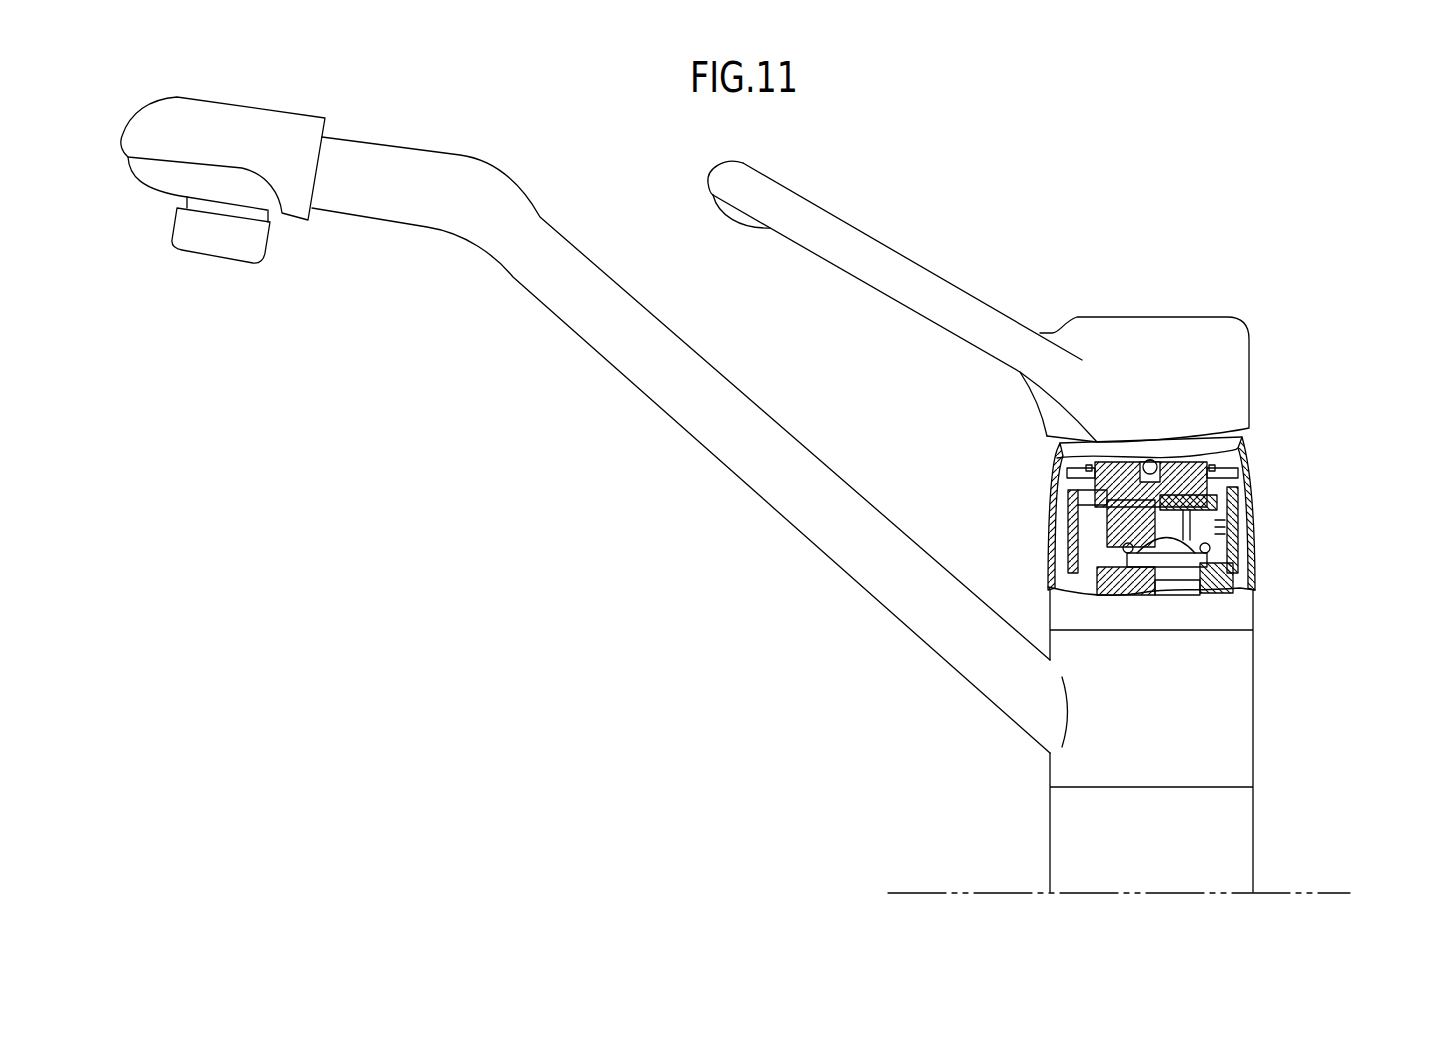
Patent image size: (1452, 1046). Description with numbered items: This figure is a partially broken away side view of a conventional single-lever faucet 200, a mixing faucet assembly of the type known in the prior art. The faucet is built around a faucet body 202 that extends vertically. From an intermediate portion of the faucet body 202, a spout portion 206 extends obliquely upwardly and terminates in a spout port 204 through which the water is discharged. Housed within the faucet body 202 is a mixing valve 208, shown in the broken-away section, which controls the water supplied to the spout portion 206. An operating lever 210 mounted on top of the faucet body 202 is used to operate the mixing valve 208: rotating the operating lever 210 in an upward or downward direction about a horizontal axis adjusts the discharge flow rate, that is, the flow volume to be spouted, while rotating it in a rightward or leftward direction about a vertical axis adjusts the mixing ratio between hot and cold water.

The single-lever faucet 200 is at (690, 566).
The faucet body 202 is at (1240, 693).
The spout port 204 is at (208, 258).
The spout portion 206 is at (495, 230).
The mixing valve 208 is at (1246, 507).
The operating lever 210 is at (820, 222).